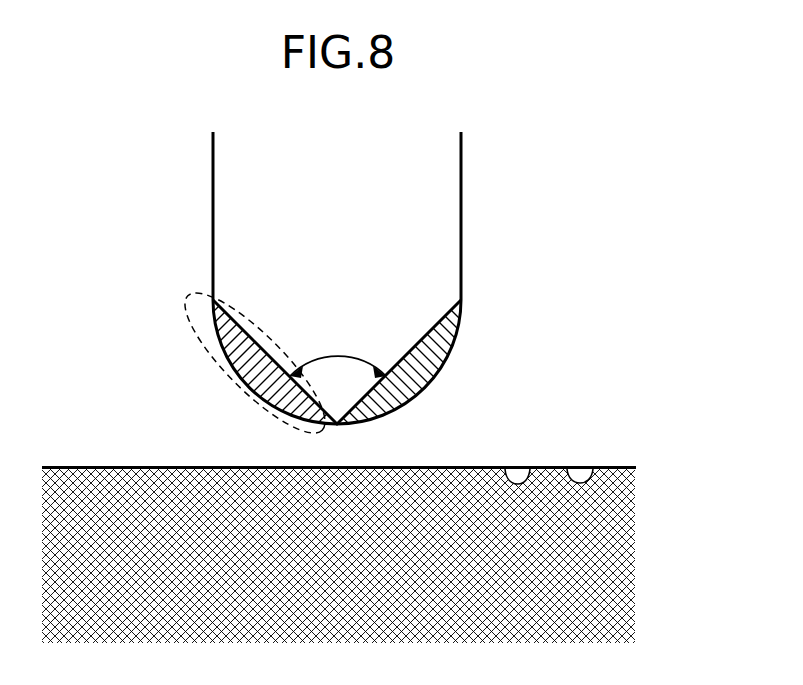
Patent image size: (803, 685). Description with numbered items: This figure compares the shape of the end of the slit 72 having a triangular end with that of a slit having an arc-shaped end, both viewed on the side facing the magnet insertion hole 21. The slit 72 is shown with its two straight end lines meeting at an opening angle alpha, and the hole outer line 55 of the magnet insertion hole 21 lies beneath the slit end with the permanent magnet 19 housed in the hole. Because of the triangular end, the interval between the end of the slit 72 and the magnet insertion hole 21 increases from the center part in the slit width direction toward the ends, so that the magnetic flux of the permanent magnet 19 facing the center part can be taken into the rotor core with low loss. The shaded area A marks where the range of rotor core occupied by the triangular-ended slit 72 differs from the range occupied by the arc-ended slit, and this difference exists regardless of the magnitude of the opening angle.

The slit 72 is at (445, 157).
The magnet insertion hole 21 is at (518, 483).
The hole outer line 55 is at (593, 470).
The permanent magnet 19 is at (622, 527).
The shaded area A is at (192, 332).